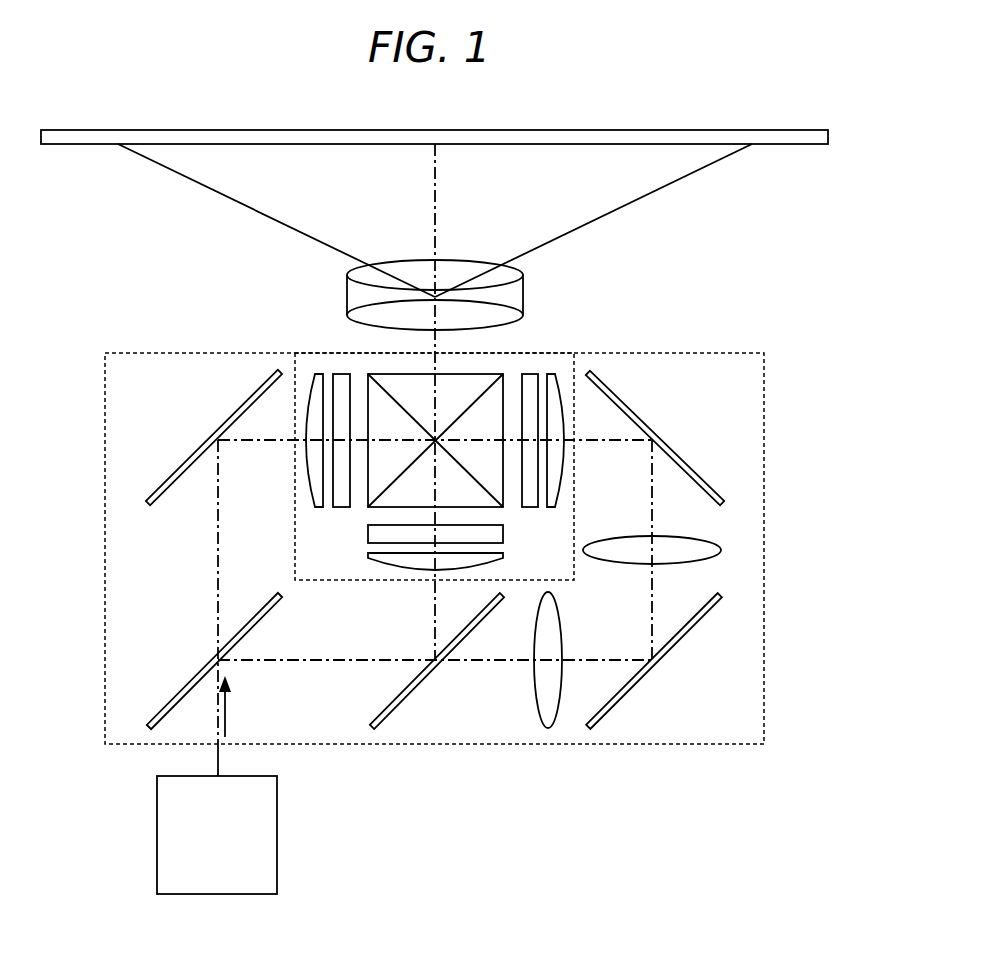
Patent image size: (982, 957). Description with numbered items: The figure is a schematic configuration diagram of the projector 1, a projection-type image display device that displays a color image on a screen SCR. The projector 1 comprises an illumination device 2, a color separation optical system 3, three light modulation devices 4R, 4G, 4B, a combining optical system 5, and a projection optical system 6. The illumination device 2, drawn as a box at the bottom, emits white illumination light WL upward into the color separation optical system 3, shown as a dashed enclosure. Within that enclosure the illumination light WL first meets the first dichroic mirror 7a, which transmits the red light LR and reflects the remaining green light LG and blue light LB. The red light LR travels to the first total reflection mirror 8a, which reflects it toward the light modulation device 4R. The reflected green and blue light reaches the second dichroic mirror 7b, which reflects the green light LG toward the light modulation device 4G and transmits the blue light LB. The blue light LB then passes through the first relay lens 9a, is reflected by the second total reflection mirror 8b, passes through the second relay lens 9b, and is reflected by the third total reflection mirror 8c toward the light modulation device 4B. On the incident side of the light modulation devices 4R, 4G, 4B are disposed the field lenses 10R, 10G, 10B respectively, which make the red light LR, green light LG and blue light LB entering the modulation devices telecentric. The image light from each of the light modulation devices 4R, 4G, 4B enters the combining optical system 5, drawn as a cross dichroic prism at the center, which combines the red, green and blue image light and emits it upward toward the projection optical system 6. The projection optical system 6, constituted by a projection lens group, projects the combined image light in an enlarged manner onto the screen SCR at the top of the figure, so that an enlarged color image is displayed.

The projector 1 is at (768, 337).
The illumination device 2 is at (277, 868).
The color separation optical system 3 is at (105, 495).
The light modulation device 4R is at (340, 373).
The light modulation device 4G is at (373, 537).
The light modulation device 4B is at (530, 373).
The combining optical system 5 is at (457, 382).
The projection optical system 6 is at (415, 272).
The first dichroic mirror 7a is at (180, 688).
The second dichroic mirror 7b is at (415, 690).
The first total reflection mirror 8a is at (192, 455).
The second total reflection mirror 8b is at (680, 645).
The third total reflection mirror 8c is at (680, 458).
The first relay lens 9a is at (533, 680).
The second relay lens 9b is at (705, 540).
The field lens 10R is at (315, 373).
The field lens 10G is at (373, 558).
The field lens 10B is at (553, 373).
The screen SCR is at (792, 147).
The illumination light WL is at (226, 722).
The red light LR is at (218, 575).
The green light LG is at (435, 615).
The blue light LB is at (652, 608).